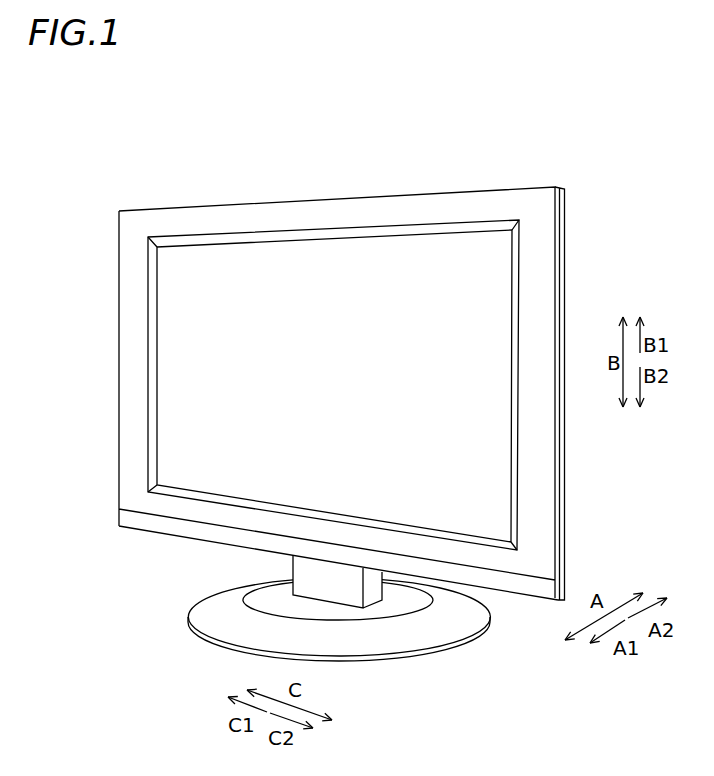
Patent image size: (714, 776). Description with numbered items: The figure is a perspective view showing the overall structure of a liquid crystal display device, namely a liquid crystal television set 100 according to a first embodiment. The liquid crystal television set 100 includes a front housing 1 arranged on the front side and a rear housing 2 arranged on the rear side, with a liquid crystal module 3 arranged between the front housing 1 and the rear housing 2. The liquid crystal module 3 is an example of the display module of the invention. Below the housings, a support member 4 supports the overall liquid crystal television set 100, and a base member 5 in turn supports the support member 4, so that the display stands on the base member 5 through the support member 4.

The liquid crystal television set 100 is at (532, 130).
The front housing 1 is at (493, 200).
The rear housing 2 is at (565, 200).
The liquid crystal module 3 is at (331, 282).
The support member 4 is at (293, 567).
The base member 5 is at (208, 612).